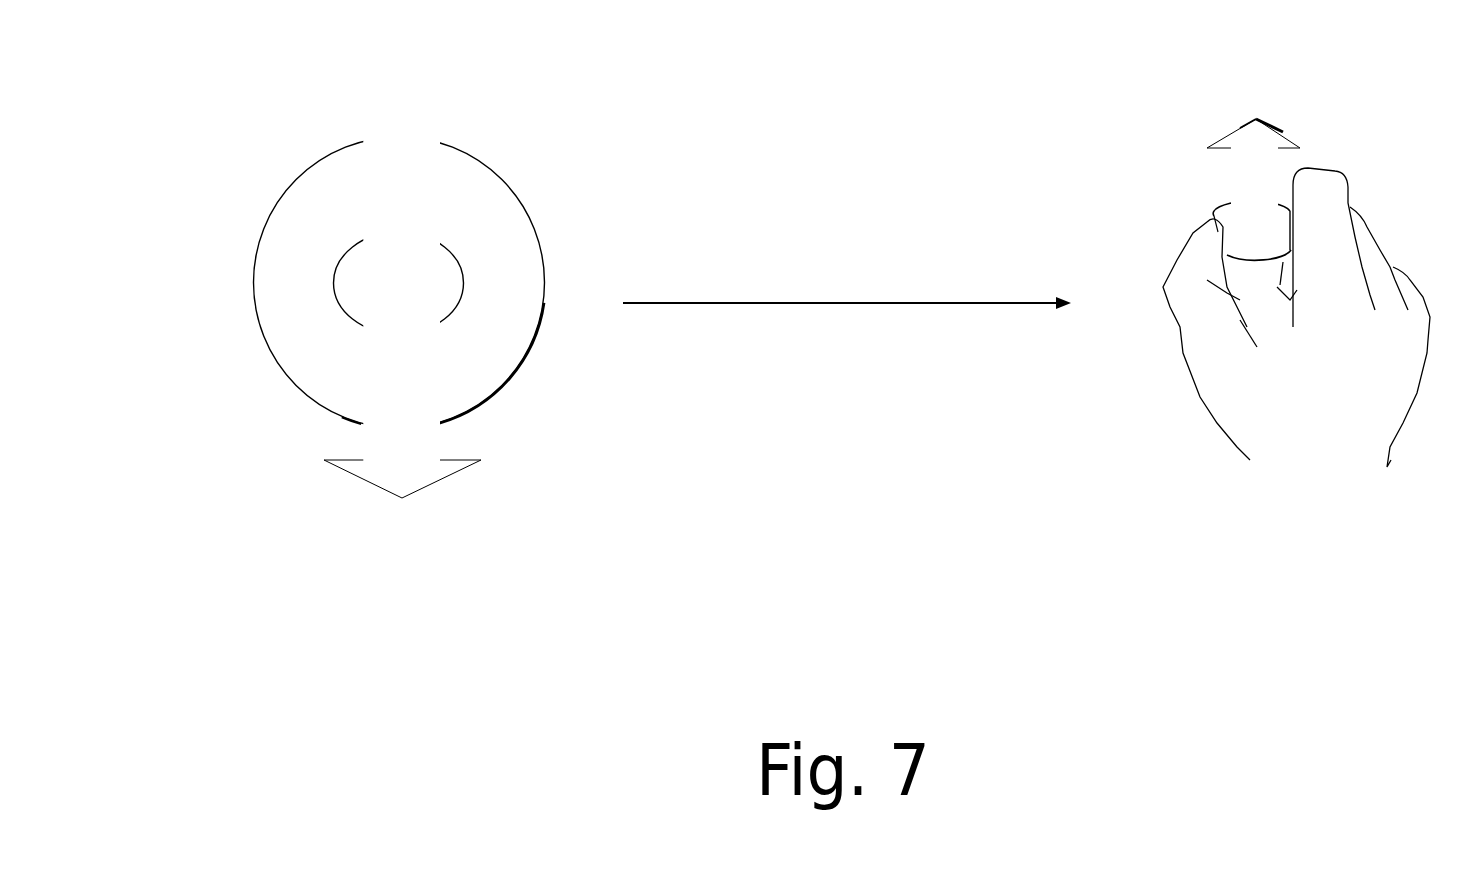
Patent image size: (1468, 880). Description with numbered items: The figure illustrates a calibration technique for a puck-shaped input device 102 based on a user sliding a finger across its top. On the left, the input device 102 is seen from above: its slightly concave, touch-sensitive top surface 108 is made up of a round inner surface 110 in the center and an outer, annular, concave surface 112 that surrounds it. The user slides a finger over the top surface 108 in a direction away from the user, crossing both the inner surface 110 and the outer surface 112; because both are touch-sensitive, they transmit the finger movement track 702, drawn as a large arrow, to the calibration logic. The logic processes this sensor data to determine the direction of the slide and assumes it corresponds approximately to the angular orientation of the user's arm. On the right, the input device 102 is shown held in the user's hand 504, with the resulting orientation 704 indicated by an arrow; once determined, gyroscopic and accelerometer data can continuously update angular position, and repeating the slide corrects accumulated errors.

The input device 102 is at (300, 169).
The top surface 108 is at (276, 255).
The inner surface 110 is at (442, 275).
The outer surface 112 is at (517, 268).
The finger movement track 702 is at (390, 449).
The orientation 704 is at (1238, 117).
The user's hand 504 is at (1272, 455).